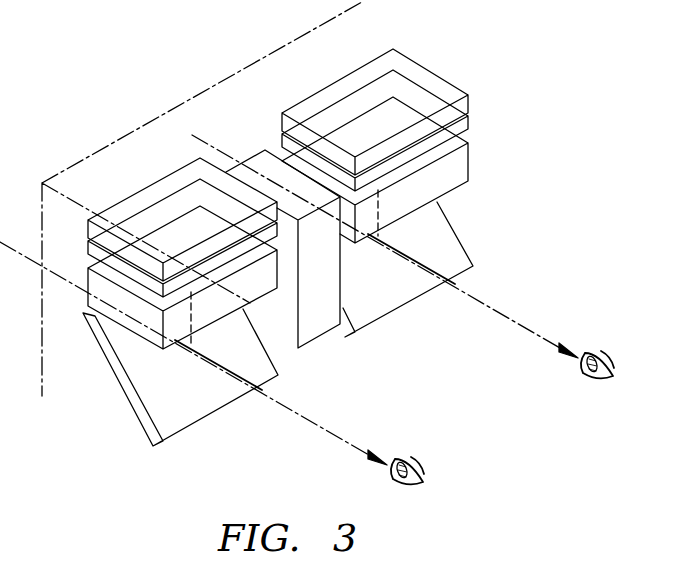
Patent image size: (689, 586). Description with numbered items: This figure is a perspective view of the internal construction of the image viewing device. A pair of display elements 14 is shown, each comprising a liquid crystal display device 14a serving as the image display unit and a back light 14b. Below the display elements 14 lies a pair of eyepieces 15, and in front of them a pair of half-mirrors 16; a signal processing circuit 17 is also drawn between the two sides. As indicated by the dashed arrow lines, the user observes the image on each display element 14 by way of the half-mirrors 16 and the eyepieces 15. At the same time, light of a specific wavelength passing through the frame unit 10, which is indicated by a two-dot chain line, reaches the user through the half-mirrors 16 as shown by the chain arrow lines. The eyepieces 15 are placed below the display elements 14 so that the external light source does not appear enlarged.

The frame unit 10 is at (227, 74).
The display element 14 is at (335, 173).
The liquid crystal display device 14a is at (468, 122).
The back light 14b is at (468, 100).
The eyepiece 15 is at (468, 160).
The half-mirror 16 is at (458, 232).
The signal processing circuit 17 is at (320, 337).